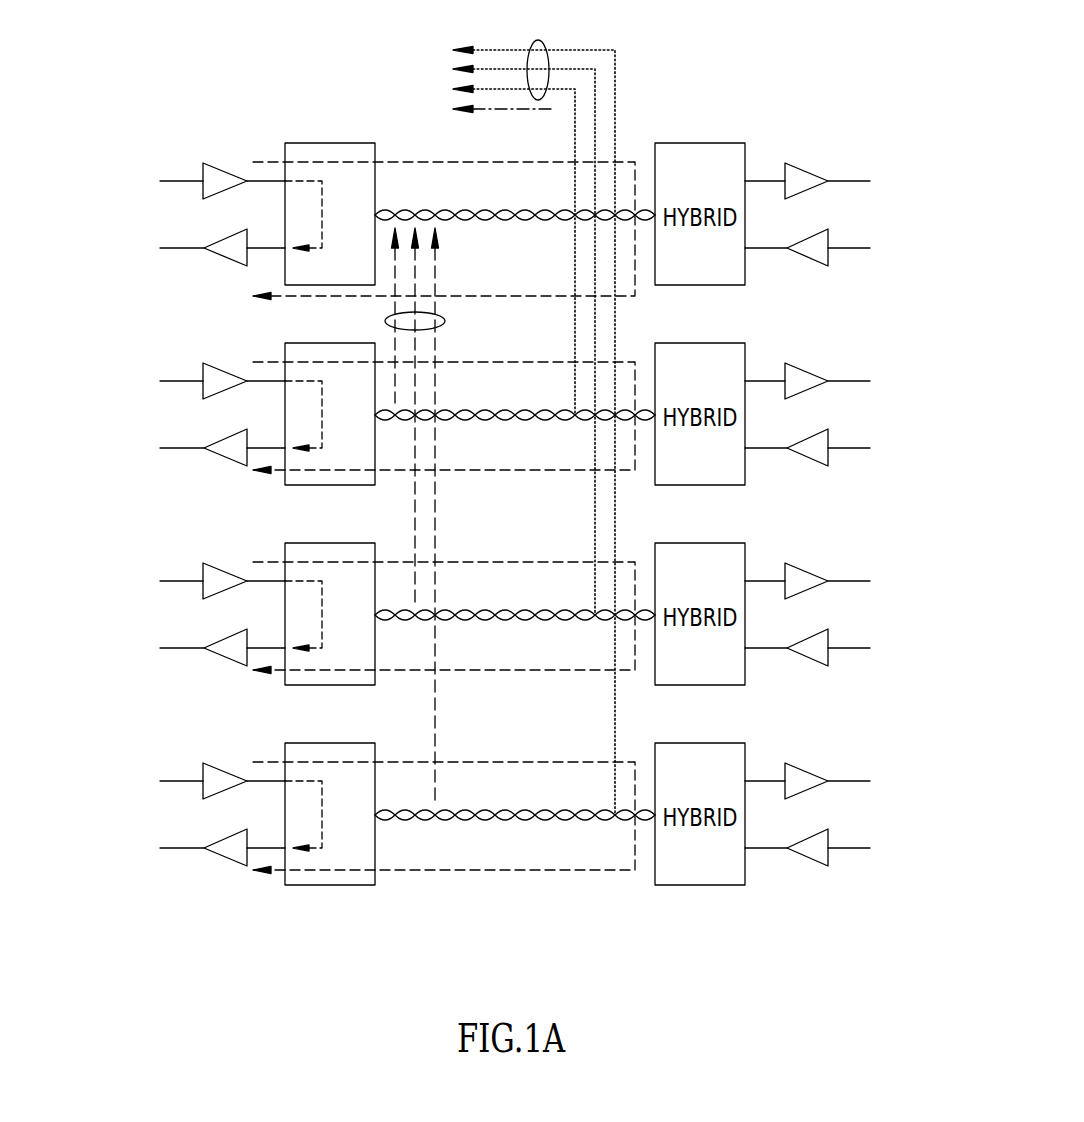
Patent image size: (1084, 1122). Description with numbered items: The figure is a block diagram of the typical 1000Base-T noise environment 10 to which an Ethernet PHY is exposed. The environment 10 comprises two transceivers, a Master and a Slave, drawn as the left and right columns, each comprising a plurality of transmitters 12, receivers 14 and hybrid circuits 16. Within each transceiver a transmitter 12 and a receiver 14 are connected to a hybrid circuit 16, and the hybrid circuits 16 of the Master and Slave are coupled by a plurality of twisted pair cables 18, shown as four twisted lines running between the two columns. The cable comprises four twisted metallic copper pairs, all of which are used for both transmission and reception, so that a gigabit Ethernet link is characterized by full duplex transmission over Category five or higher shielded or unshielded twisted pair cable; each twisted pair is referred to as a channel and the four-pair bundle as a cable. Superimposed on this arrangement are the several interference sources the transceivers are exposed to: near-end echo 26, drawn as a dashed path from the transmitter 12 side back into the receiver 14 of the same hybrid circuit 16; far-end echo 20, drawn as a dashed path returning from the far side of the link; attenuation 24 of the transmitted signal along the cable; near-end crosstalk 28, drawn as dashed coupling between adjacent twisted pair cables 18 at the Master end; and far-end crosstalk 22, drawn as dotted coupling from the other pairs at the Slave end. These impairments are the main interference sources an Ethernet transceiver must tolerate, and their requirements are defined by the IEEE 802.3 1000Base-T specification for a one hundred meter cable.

The noise environment 10 is at (286, 940).
The transmitter 12 is at (235, 163).
The receiver 14 is at (232, 229).
The hybrid circuit 16 is at (327, 142).
The twisted pair cable 18 is at (415, 210).
The far-end echo 20 is at (630, 162).
The far-end crosstalk 22 is at (538, 40).
The attenuation 24 is at (525, 111).
The near-end echo 26 is at (323, 198).
The near-end crosstalk 28 is at (445, 321).